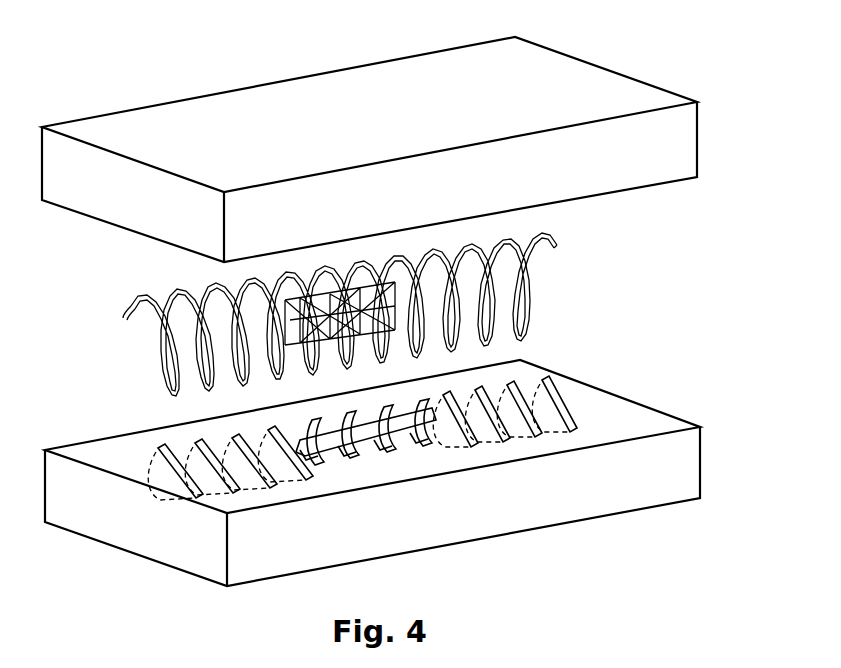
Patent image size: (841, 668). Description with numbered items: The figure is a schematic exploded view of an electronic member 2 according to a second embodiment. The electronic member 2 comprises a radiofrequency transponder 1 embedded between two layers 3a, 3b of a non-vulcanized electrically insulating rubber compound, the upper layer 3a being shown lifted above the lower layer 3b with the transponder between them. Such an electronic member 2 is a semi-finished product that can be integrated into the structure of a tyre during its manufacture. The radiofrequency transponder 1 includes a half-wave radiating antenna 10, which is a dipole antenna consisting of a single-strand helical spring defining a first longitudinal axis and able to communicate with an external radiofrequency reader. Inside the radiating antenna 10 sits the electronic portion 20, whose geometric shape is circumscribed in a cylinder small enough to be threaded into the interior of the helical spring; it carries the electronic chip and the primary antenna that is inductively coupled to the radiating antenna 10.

The radiofrequency transponder 1 is at (371, 309).
The electronic member 2 is at (377, 141).
The layer of non-vulcanized electrically insulating rubber compound 3a is at (221, 144).
The layer of non-vulcanized electrically insulating rubber compound 3b is at (603, 508).
The half-wave radiating antenna 10 is at (574, 238).
The electronic portion 20 is at (403, 353).